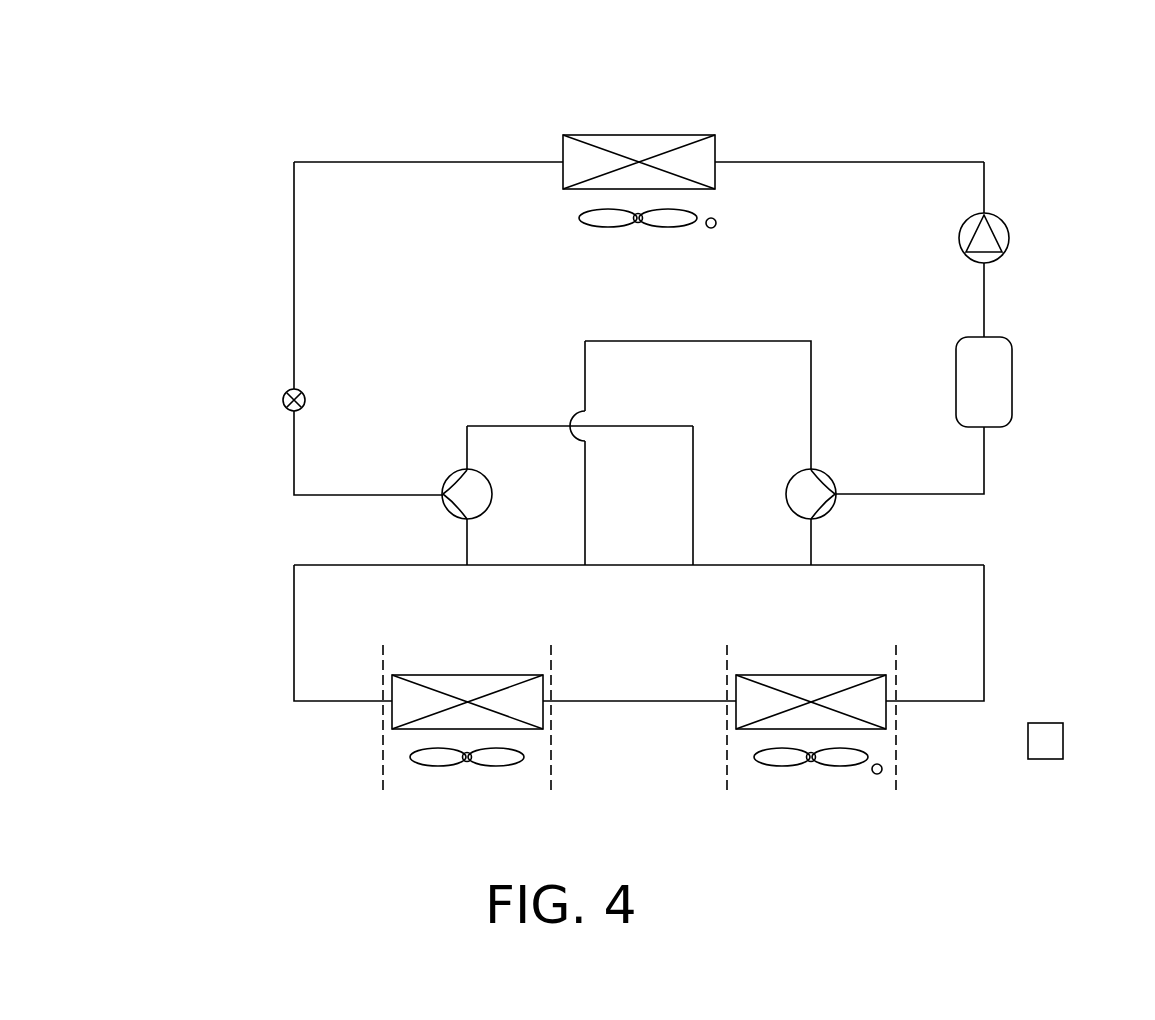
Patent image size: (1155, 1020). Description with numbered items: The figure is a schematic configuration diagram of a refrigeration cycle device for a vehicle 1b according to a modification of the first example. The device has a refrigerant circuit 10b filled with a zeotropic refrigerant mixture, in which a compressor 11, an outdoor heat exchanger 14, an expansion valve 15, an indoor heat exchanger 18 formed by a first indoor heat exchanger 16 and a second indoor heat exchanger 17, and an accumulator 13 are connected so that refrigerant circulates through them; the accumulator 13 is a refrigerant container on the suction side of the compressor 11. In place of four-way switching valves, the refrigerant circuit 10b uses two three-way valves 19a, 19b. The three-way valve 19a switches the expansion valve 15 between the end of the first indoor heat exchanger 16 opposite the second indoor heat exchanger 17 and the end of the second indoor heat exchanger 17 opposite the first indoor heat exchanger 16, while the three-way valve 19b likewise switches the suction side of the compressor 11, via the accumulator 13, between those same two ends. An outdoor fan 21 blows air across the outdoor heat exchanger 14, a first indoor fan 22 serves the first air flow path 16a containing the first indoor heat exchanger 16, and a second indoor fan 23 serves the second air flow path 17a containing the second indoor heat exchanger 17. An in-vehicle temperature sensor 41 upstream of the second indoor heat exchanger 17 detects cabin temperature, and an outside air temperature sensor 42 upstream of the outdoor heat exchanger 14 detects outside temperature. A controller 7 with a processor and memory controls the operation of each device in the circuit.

The refrigeration cycle device for a vehicle 1b is at (226, 85).
The refrigerant circuit 10b is at (889, 130).
The compressor 11 is at (1010, 238).
The accumulator 13 is at (1013, 382).
The outdoor heat exchanger 14 is at (681, 135).
The expansion valve 15 is at (282, 398).
The first indoor heat exchanger 16 is at (511, 675).
The first air flow path 16a is at (392, 640).
The second indoor heat exchanger 17 is at (852, 675).
The second air flow path 17a is at (736, 640).
The indoor heat exchanger 18 is at (924, 779).
The three-way valve 19a is at (486, 478).
The three-way valve 19b is at (830, 478).
The outdoor fan 21 is at (663, 226).
The first indoor fan 22 is at (491, 766).
The second indoor fan 23 is at (836, 766).
The in-vehicle temperature sensor 41 is at (877, 775).
The outside air temperature sensor 42 is at (711, 229).
The controller 7 is at (1063, 740).